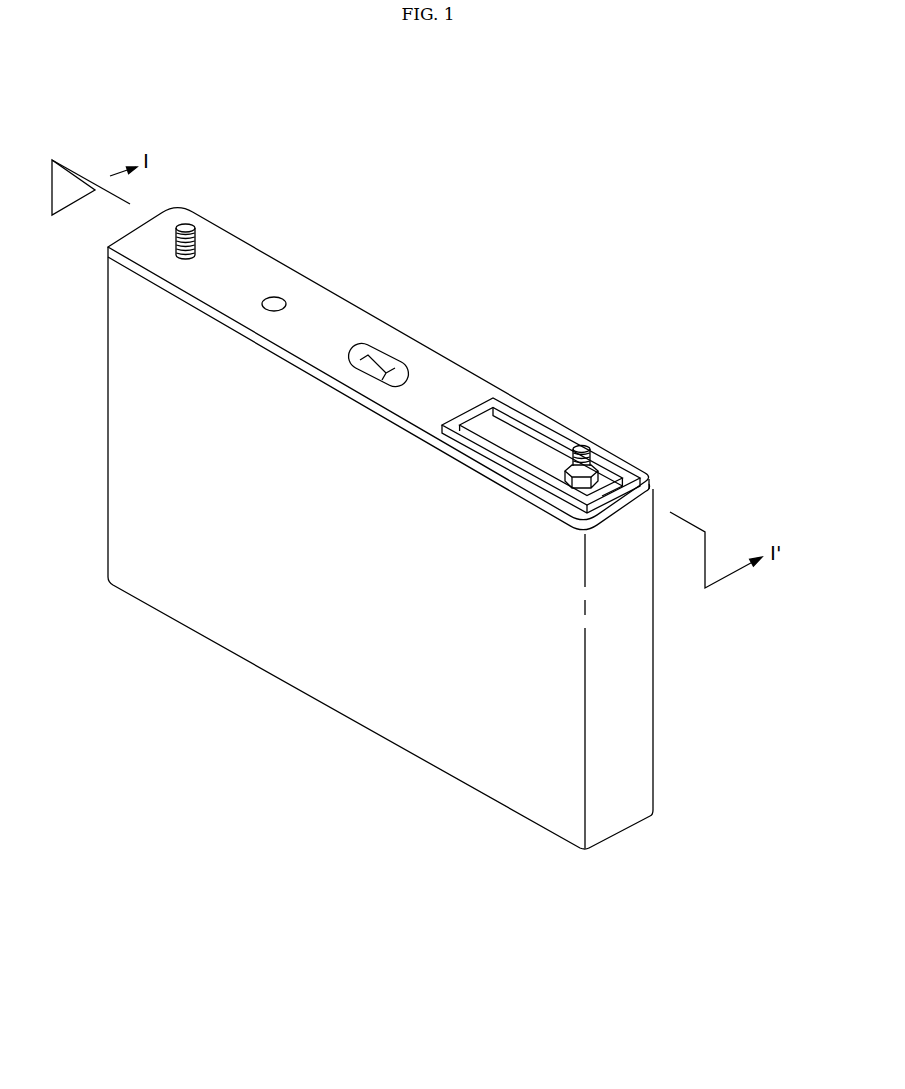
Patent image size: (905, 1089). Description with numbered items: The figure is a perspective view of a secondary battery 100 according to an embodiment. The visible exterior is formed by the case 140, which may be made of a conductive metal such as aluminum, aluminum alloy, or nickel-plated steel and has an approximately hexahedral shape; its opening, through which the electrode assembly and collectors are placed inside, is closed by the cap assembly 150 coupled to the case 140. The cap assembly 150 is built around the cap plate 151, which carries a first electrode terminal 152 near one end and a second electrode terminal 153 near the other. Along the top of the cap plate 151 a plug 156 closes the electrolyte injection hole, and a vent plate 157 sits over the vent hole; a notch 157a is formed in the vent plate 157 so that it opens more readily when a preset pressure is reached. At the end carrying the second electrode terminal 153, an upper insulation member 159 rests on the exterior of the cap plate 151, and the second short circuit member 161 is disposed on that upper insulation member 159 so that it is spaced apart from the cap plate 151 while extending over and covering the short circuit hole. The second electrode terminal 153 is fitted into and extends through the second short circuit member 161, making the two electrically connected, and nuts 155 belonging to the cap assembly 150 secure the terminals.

The secondary battery 100 is at (424, 191).
The case 140 is at (325, 688).
The cap assembly 150 is at (477, 381).
The cap plate 151 is at (338, 315).
The first electrode terminal 152 is at (186, 226).
The second electrode terminal 153 is at (584, 448).
The nuts 155 is at (638, 470).
The plug 156 is at (276, 296).
The vent plate 157 is at (378, 351).
The notch 157a is at (390, 367).
The upper insulation member 159 is at (562, 420).
The second short circuit member 161 is at (497, 427).